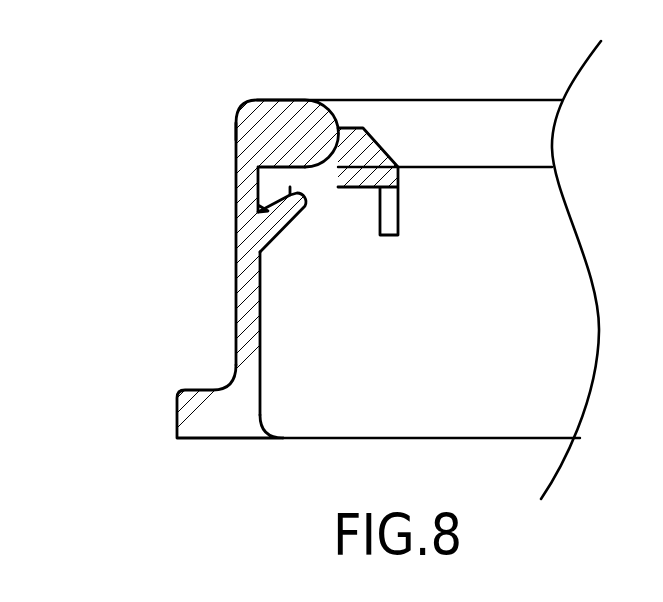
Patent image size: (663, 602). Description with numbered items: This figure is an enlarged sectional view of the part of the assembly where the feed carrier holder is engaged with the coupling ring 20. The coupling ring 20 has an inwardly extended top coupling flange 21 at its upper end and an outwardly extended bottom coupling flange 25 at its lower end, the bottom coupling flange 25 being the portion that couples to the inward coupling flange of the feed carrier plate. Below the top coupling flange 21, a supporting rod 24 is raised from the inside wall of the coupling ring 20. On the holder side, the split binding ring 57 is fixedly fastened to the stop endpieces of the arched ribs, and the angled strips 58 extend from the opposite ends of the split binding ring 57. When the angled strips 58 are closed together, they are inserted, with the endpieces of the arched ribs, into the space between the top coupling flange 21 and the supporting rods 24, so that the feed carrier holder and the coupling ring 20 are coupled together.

The coupling ring 20 is at (162, 201).
The top coupling flange 21 is at (270, 121).
The supporting rod 24 is at (275, 227).
The bottom coupling flange 25 is at (193, 412).
The split binding ring 57 is at (363, 152).
The angled strip 58 is at (275, 178).